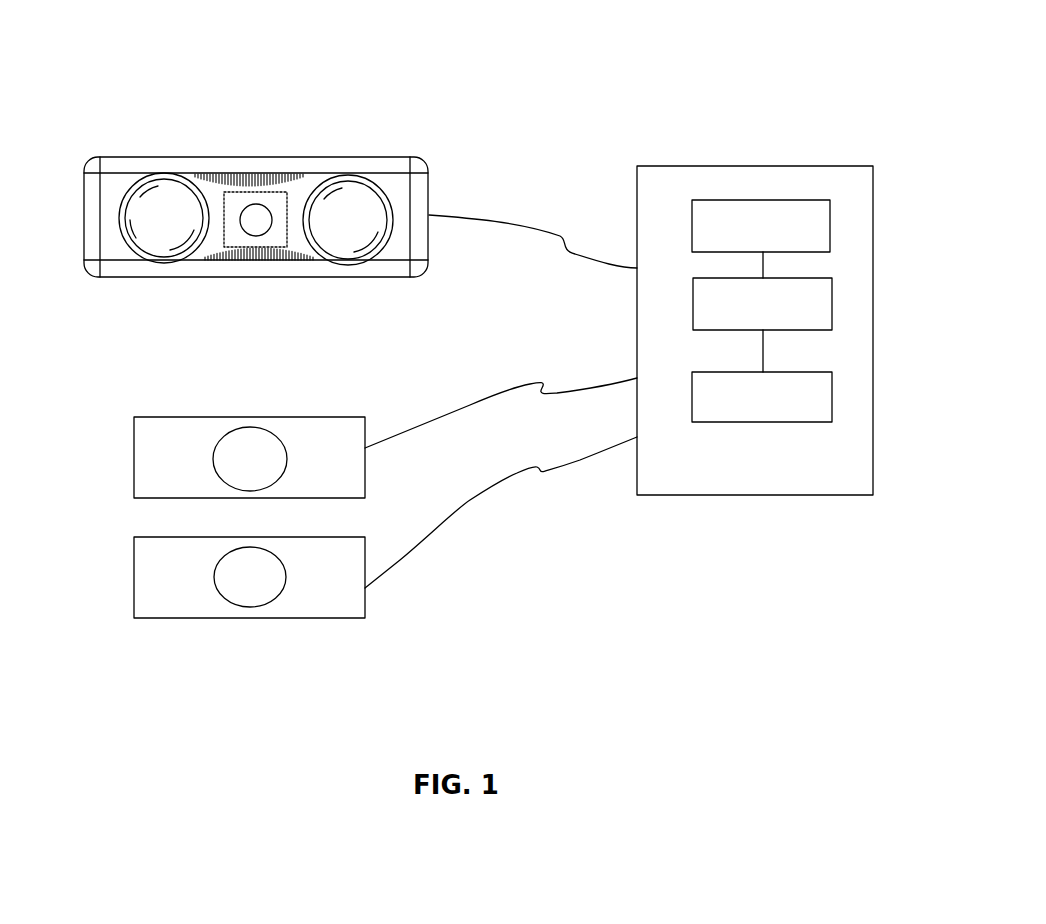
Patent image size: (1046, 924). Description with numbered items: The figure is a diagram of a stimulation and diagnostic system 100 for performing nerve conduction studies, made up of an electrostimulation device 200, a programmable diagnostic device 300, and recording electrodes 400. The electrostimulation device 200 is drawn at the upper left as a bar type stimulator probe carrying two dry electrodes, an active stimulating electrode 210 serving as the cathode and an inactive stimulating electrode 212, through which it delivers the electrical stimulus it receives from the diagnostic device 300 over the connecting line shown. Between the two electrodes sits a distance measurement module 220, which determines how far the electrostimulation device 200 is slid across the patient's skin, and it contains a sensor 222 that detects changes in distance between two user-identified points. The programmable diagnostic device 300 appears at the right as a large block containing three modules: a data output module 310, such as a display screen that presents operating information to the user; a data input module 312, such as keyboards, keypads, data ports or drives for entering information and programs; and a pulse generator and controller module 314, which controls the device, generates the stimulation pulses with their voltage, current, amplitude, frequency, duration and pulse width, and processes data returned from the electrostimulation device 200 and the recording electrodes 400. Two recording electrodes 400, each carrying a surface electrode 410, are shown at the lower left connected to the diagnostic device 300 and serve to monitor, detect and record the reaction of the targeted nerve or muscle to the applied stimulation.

The stimulation and diagnostic system 100 is at (593, 55).
The electrostimulation device 200 is at (315, 157).
The active stimulating electrode 210 is at (160, 195).
The inactive stimulating electrode 212 is at (365, 195).
The distance measurement module 220 is at (218, 238).
The sensor 222 is at (262, 229).
The programmable diagnostic device 300 is at (755, 163).
The data output module 310 is at (830, 230).
The data input module 312 is at (832, 305).
The pulse generator and controller module 314 is at (832, 400).
The recording electrodes 400 is at (315, 417).
The surface electrodes 410 is at (250, 442).